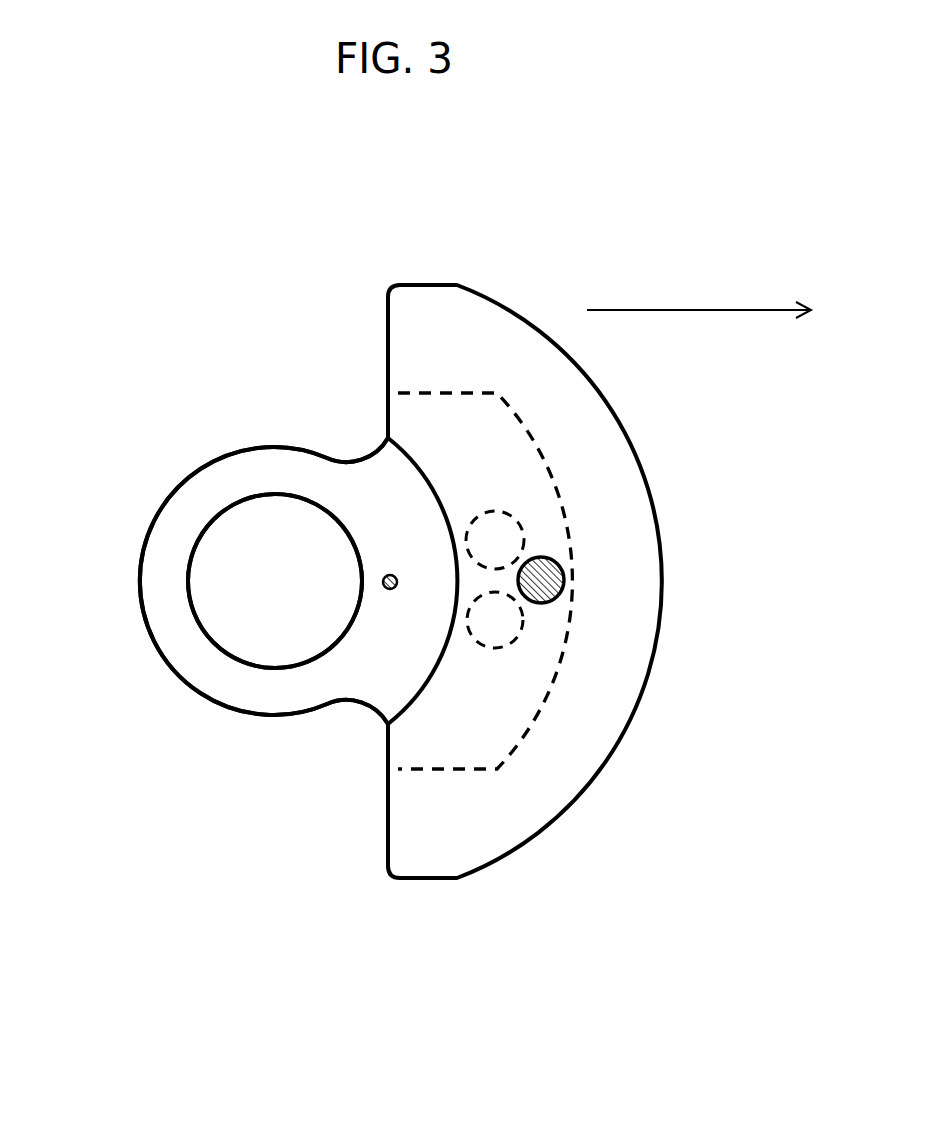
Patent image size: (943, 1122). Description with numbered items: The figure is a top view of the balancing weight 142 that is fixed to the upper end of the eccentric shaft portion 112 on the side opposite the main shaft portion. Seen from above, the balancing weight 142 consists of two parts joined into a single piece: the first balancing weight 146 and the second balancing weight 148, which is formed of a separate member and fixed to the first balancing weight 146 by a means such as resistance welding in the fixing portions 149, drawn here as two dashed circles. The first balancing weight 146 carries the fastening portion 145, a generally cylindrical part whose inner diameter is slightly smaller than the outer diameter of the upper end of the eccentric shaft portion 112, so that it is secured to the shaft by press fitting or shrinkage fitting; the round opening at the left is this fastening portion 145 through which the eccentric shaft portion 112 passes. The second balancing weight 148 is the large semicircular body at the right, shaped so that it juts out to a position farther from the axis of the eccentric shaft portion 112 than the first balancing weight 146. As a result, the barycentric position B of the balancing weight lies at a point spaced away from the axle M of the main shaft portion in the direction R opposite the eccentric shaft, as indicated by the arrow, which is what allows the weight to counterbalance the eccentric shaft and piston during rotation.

The eccentric shaft portion 112 is at (275, 583).
The balancing weight 142 is at (170, 632).
The fastening portion 145 is at (227, 507).
The first balancing weight 146 is at (255, 692).
The second balancing weight 148 is at (598, 582).
The fixing portions 149 is at (507, 545).
The barycentric position B is at (548, 603).
The axle of the main shaft portion M is at (390, 588).
The direction opposite the eccentric shaft R is at (699, 292).